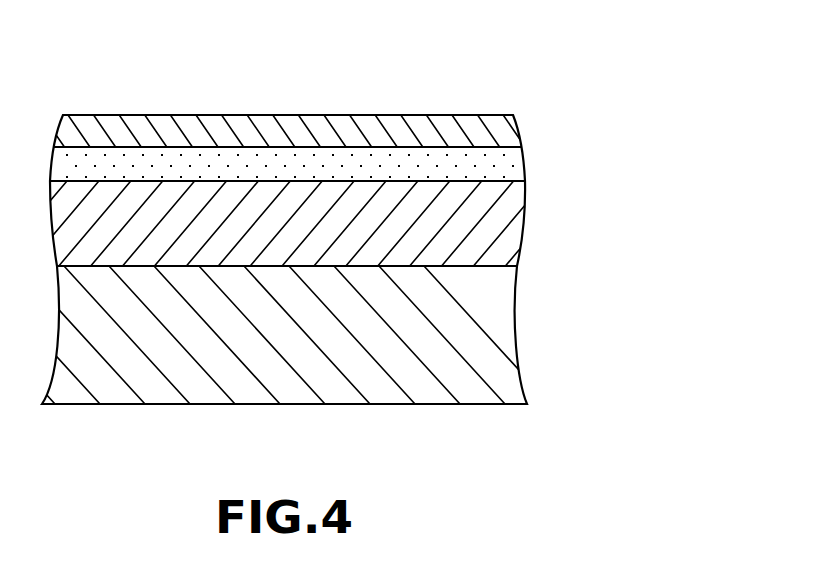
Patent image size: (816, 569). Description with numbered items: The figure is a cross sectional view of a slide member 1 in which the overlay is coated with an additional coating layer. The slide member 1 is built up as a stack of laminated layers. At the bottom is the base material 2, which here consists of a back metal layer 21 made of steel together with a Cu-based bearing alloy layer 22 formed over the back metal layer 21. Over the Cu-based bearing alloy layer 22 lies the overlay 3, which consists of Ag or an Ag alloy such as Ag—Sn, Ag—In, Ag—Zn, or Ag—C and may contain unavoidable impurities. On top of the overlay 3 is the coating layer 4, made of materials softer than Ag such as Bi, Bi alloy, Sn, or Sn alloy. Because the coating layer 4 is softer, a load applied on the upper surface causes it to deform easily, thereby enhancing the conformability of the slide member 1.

The slide member 1 is at (333, 202).
The base material 2 is at (333, 292).
The back metal layer 21 is at (312, 335).
The Cu-based bearing alloy layer 22 is at (513, 213).
The overlay 3 is at (513, 163).
The coating layer 4 is at (493, 130).